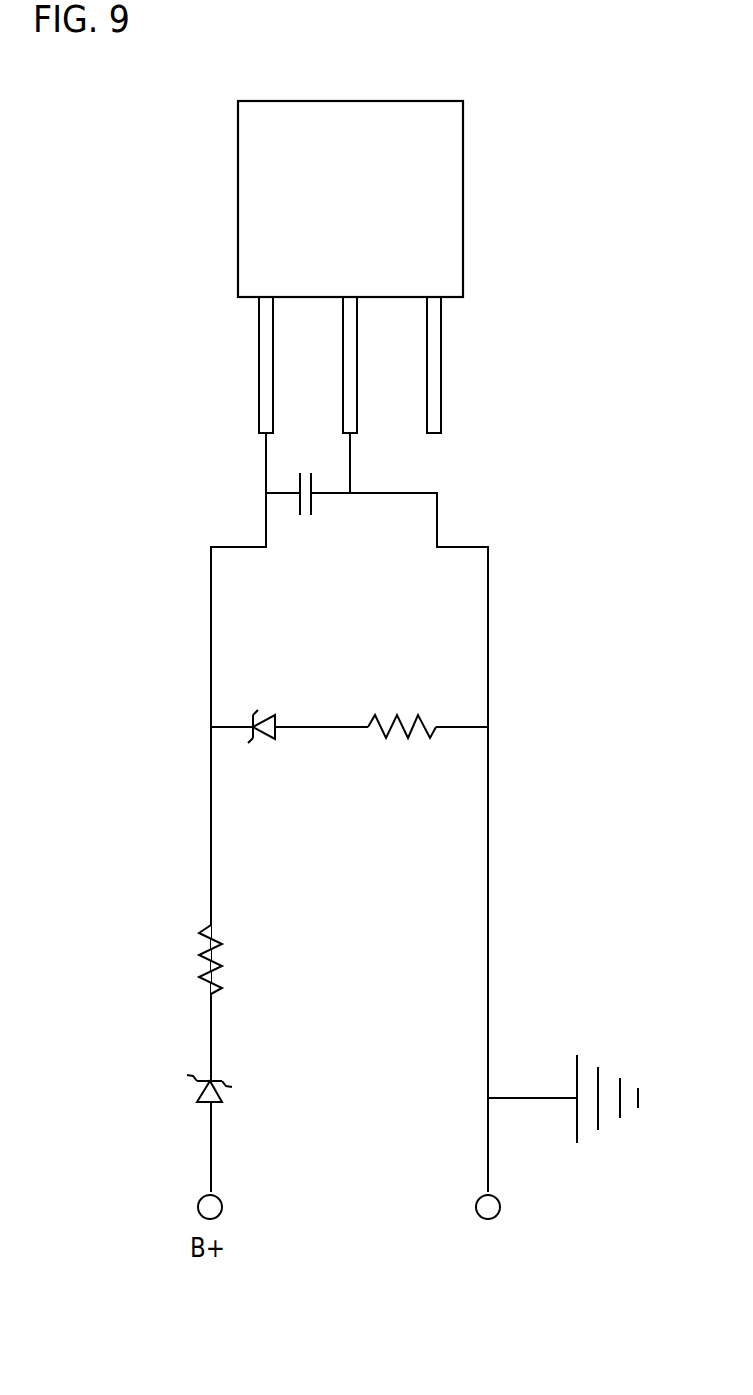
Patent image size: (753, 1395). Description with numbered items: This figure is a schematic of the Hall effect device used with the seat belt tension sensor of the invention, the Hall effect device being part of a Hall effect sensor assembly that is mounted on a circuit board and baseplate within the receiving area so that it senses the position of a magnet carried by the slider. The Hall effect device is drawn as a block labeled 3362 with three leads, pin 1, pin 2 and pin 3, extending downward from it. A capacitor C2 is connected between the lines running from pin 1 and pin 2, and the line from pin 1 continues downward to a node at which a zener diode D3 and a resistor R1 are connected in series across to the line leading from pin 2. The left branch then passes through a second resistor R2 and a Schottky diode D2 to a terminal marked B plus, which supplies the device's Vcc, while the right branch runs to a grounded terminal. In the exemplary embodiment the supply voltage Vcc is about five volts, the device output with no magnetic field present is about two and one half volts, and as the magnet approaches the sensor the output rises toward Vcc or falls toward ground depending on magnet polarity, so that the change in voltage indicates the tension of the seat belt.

The Hall effect device 3362 is at (367, 175).
The Hall effect device pin 1 is at (266, 342).
The Hall effect device pin 2 is at (347, 345).
The Hall effect device pin 3 is at (431, 346).
The capacitor 0.1 mf C2 is at (229, 505).
The zener diode 20 V D3 is at (257, 761).
The resistor 100 ohms 1/4 W R1 is at (506, 730).
The resistor 56 ohms 1/4 W R2 is at (133, 960).
The Schottky diode D2 is at (122, 1100).